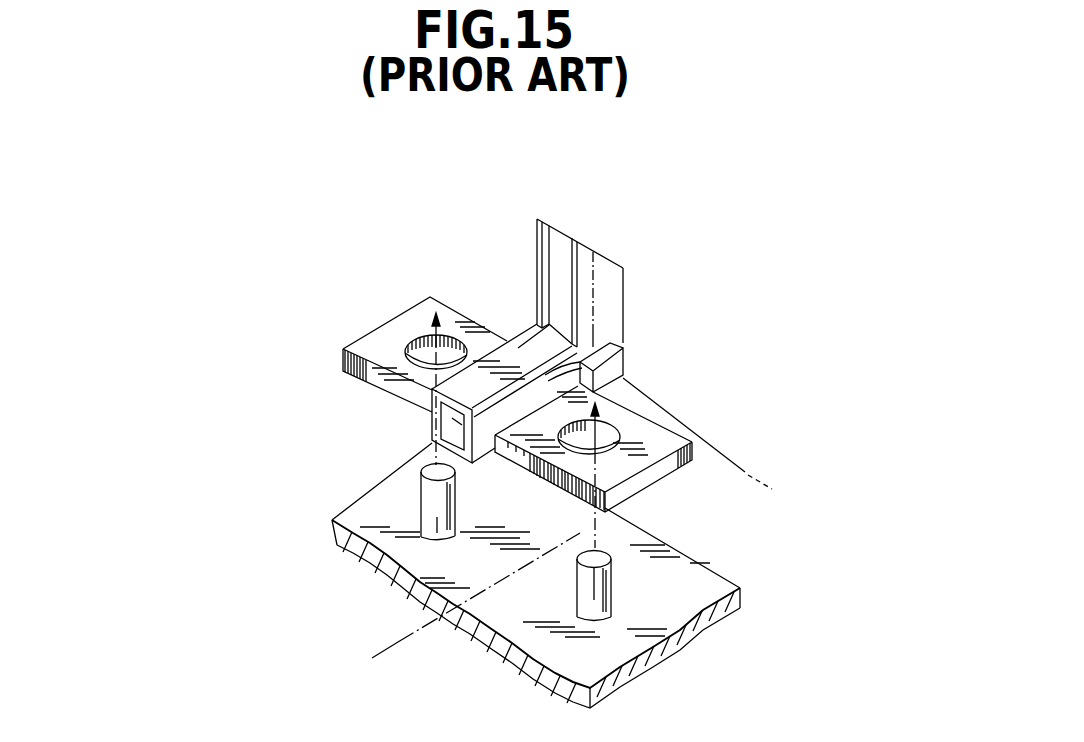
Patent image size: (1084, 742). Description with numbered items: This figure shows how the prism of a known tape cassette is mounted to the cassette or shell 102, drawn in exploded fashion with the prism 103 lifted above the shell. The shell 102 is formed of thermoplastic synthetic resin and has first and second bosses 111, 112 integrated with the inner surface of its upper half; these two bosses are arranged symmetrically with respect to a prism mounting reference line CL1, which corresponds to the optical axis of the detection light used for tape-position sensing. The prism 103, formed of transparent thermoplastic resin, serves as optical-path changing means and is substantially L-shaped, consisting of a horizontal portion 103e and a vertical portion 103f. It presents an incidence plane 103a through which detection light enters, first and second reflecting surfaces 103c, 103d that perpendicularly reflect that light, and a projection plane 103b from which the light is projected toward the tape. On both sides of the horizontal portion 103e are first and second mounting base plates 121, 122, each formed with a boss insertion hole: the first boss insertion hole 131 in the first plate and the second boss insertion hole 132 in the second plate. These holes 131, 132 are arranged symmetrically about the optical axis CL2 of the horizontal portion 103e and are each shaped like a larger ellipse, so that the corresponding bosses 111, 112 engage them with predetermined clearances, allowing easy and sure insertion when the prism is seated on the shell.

The cassette or shell 102 is at (322, 551).
The prism 103 is at (552, 350).
The incidence plane 103a is at (432, 418).
The projection plane 103b is at (560, 262).
The first reflecting surface 103c is at (731, 442).
The second reflecting surface 103d is at (597, 255).
The horizontal portion 103e is at (600, 371).
The vertical portion 103f is at (607, 324).
The first boss 111 is at (421, 500).
The second boss 112 is at (668, 652).
The first mounting base plate 121 is at (375, 342).
The second mounting base plate 122 is at (647, 450).
The first boss insertion hole 131 is at (418, 335).
The second boss insertion hole 132 is at (597, 452).
The prism mounting reference line CL1 is at (393, 637).
The optical axis of the horizontal portion CL2 is at (428, 450).